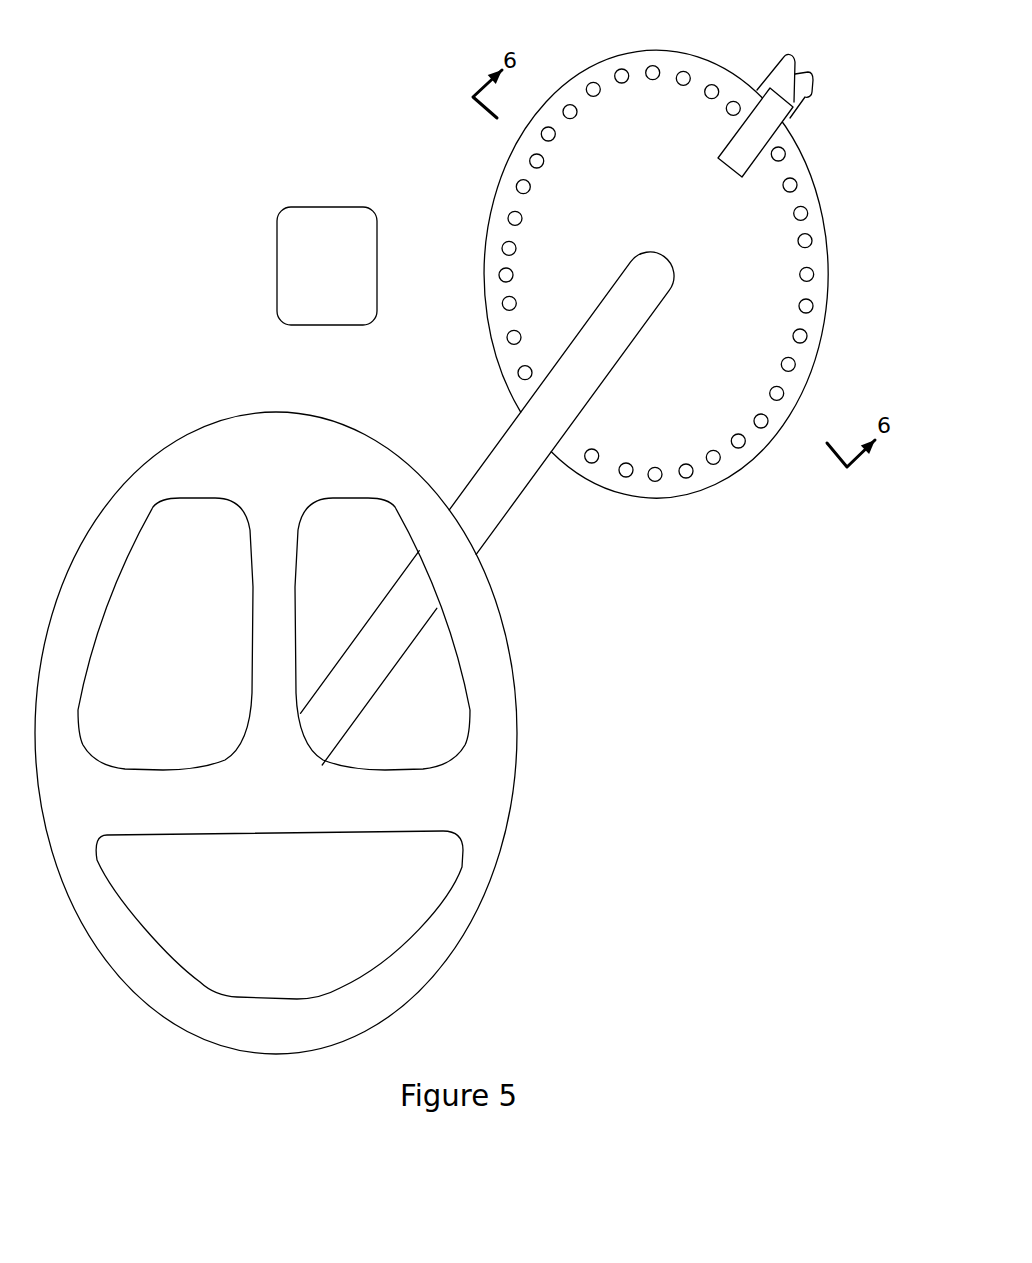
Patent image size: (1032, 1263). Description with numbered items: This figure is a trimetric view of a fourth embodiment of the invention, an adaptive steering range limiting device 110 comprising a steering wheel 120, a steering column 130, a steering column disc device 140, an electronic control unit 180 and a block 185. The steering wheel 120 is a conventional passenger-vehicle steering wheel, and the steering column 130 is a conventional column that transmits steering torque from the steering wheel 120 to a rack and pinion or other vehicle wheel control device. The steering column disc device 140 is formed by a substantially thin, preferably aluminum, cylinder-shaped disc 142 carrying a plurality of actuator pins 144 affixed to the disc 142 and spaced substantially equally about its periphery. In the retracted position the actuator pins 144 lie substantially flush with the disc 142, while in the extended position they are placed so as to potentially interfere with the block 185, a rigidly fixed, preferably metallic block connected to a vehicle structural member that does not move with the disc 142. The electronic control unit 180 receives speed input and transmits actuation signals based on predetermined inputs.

The adaptive steering range limiting device 110 is at (454, 533).
The steering wheel 120 is at (276, 706).
The steering column 130 is at (488, 508).
The steering column disc device 140 is at (643, 291).
The disc 142 is at (656, 255).
The actuator pins 144 is at (613, 274).
The electronic control unit 180 is at (282, 247).
The block 185 is at (795, 116).